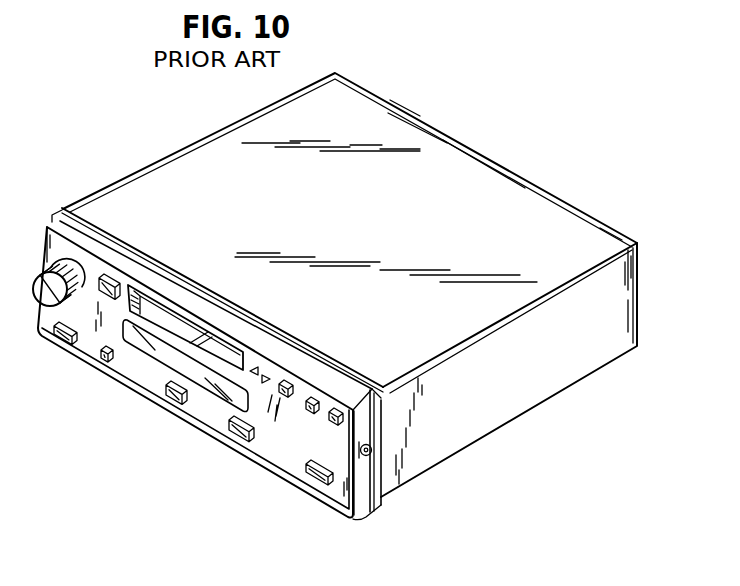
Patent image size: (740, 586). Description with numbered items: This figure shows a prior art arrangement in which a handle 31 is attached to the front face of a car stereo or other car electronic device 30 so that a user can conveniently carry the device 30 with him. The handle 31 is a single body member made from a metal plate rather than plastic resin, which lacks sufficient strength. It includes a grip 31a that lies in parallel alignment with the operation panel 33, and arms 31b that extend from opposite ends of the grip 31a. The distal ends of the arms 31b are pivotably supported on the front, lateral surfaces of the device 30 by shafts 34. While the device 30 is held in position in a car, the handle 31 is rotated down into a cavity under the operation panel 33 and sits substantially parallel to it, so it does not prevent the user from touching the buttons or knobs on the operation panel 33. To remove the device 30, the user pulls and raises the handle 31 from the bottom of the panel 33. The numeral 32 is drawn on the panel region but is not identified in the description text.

The device 30 is at (163, 178).
The handle 31 is at (245, 383).
The grip 31a is at (270, 469).
The arms 31b is at (370, 502).
The upper portion (nose) of front panel 32 is at (268, 343).
The operation panel 33 is at (212, 412).
The shafts 34 is at (370, 454).